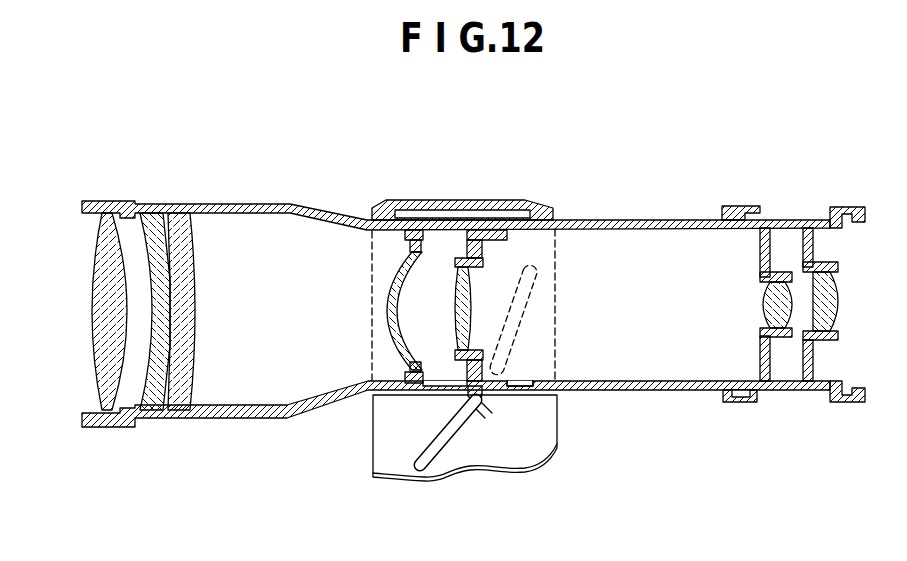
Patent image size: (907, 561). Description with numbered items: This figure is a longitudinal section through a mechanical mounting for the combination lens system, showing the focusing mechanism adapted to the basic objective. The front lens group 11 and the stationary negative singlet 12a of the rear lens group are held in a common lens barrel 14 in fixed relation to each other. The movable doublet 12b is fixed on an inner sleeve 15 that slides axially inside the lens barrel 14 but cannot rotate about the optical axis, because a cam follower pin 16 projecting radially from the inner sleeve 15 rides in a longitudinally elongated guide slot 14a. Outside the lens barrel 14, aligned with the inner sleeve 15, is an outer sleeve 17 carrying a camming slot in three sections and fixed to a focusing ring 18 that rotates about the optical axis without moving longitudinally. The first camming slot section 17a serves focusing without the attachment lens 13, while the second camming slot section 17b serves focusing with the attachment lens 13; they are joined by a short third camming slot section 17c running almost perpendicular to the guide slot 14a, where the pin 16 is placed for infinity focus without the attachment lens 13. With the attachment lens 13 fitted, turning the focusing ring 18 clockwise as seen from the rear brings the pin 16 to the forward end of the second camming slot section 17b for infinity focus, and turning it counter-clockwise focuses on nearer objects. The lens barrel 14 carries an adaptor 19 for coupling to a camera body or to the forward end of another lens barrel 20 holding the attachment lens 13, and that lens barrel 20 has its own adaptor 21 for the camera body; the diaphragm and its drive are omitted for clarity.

The front lens group 11 is at (188, 158).
The stationary negative singlet 12a is at (387, 327).
The movable doublet 12b is at (456, 305).
The attachment lens 13 is at (835, 177).
The lens barrel 14 is at (310, 208).
The guide slot 14a is at (520, 385).
The inner sleeve 15 is at (507, 237).
The cam follower pin 16 is at (483, 408).
The outer sleeve 17 is at (380, 444).
The first camming slot section 17a is at (515, 320).
The second camming slot section 17b is at (447, 442).
The third camming slot section 17c is at (466, 400).
The focusing ring 18 is at (478, 204).
The adaptor 19 is at (730, 206).
The lens barrel 20 is at (771, 391).
The adaptor 21 is at (858, 402).